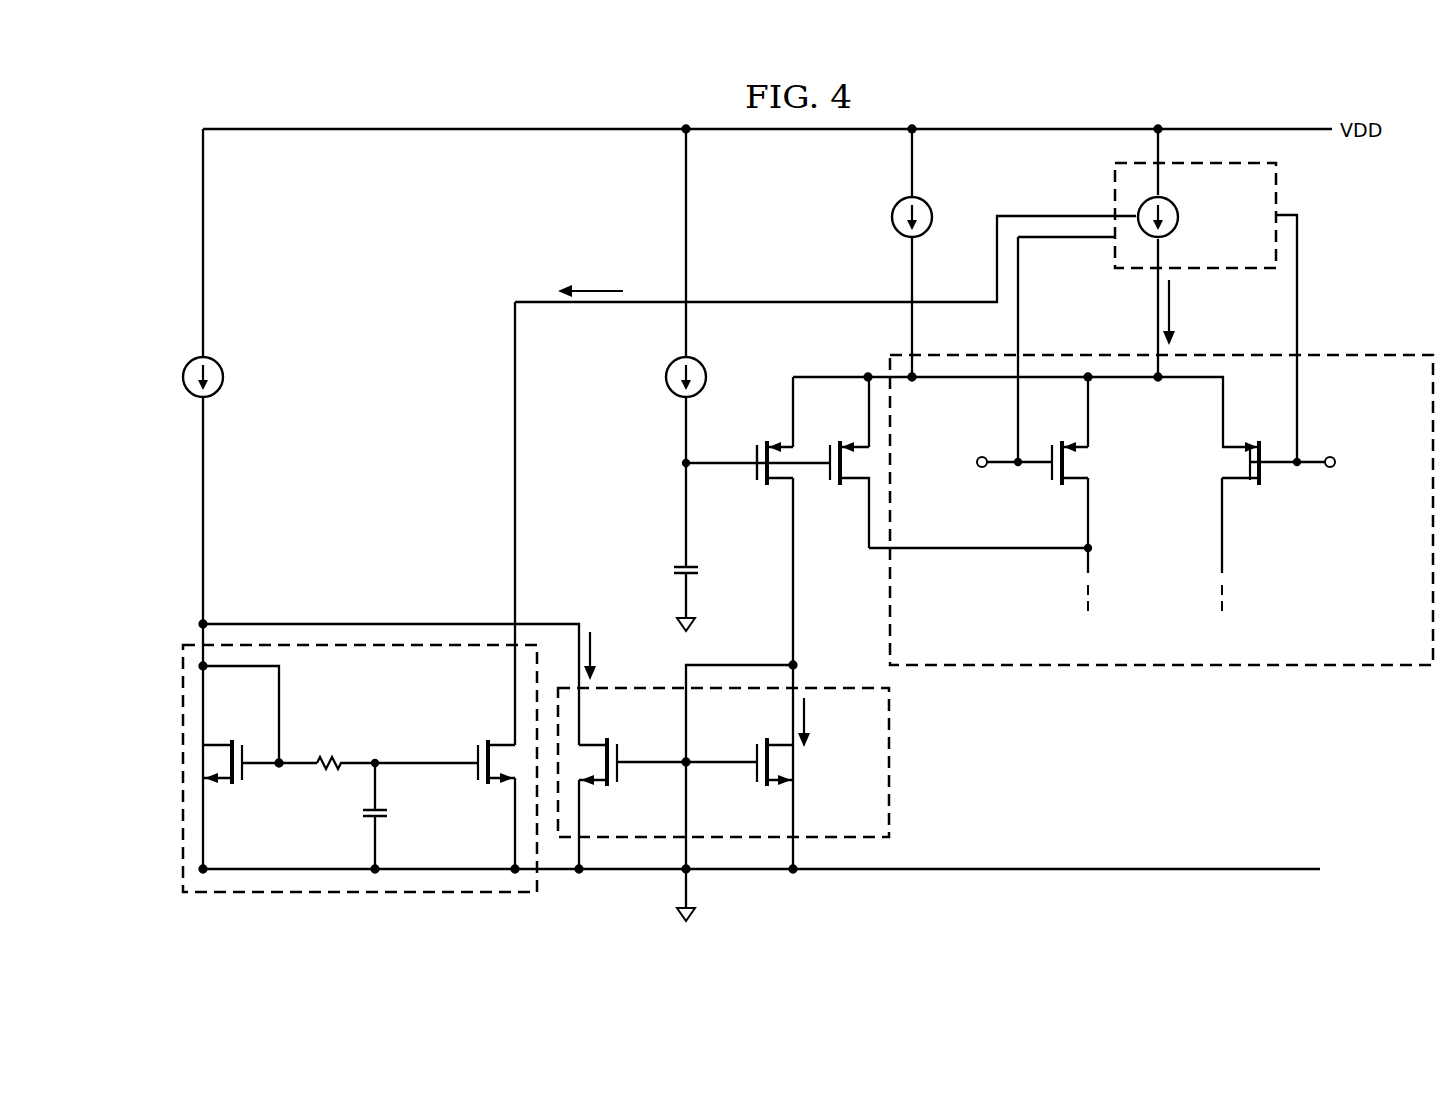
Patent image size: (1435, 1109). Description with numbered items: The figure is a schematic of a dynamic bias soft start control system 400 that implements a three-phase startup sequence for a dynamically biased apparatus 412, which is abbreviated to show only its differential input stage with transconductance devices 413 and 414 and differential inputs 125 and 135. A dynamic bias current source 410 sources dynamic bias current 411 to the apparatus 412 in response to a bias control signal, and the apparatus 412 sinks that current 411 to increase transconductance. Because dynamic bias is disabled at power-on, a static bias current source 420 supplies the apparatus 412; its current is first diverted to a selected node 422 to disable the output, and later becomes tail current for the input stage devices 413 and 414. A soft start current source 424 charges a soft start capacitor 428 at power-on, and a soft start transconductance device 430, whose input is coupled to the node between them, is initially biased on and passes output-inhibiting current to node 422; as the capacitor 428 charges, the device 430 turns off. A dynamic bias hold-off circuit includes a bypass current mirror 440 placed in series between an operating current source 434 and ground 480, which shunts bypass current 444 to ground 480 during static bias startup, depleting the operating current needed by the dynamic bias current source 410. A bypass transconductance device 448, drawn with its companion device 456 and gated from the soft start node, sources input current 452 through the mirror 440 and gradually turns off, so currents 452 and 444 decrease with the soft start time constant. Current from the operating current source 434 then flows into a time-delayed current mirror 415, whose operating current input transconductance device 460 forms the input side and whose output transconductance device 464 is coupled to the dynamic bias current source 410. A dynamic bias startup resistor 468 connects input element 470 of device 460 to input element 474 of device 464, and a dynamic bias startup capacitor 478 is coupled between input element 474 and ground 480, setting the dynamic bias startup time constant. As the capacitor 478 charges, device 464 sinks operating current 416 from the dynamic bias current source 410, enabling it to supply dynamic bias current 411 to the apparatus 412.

The dynamic bias soft start control system 400 is at (168, 116).
The dynamic bias current source 410 is at (1278, 193).
The dynamic bias current 411 is at (1172, 322).
The dynamically biased apparatus 412 is at (1334, 350).
The input stage transconductance device 413 is at (1048, 445).
The input stage transconductance device 414 is at (1253, 445).
The time-delayed current mirror 415 is at (170, 785).
The operating current 416 is at (605, 288).
The static bias current source 420 is at (891, 216).
The selected node 422 is at (1093, 553).
The soft start current source 424 is at (707, 373).
The soft start capacitor 428 is at (700, 571).
The soft start transconductance device 430 is at (832, 505).
The operating current source 434 is at (223, 374).
The bypass current mirror 440 is at (902, 778).
The bypass current 444 is at (593, 646).
The bypass transconductance device 448 is at (746, 500).
The input current 452 is at (807, 716).
The transistor 456 is at (746, 444).
The operating current input transconductance device 460 is at (680, 460).
The operating current output transconductance device 464 is at (480, 805).
The dynamic bias startup resistor 468 is at (327, 757).
The input element 470 is at (244, 744).
The input element 474 is at (480, 744).
The dynamic bias startup capacitor 478 is at (389, 814).
The ground 480 is at (681, 916).
The differential input 135 is at (994, 455).
The differential input 125 is at (1320, 456).